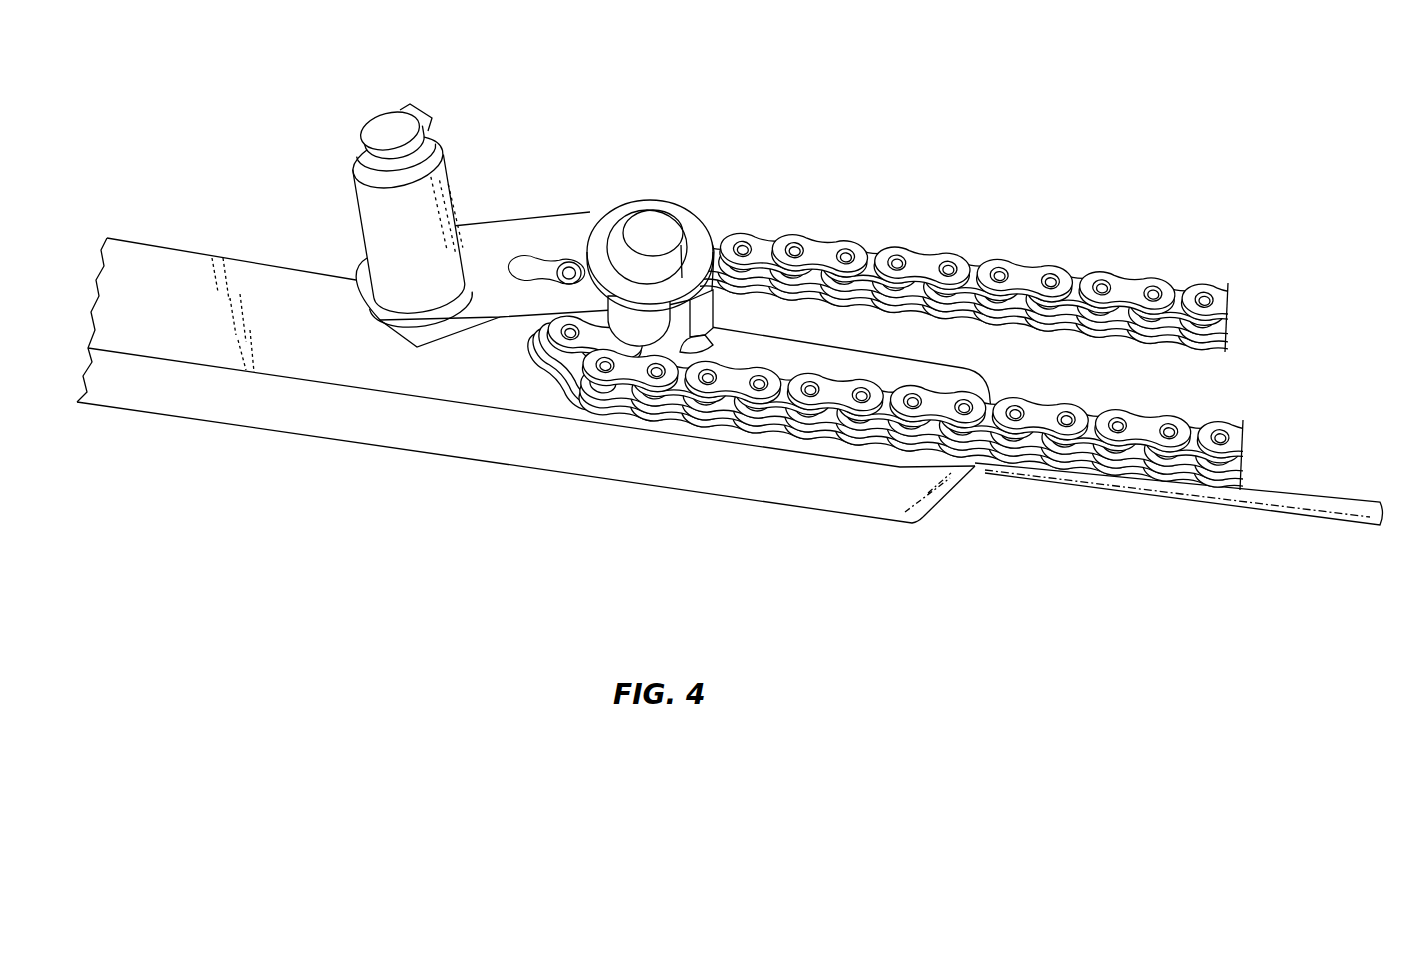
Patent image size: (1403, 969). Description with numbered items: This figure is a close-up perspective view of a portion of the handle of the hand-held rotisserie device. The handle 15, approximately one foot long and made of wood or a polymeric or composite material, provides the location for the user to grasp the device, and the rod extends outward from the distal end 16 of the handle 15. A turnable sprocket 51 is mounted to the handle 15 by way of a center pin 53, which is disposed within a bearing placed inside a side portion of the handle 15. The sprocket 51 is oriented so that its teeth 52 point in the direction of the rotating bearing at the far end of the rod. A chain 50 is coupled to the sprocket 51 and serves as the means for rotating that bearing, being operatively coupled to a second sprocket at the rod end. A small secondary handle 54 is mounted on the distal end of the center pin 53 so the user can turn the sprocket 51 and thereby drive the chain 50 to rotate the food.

The handle 15 is at (200, 397).
The distal end of the handle 16 is at (955, 483).
The chain 50 is at (1027, 272).
The turnable sprocket 51 is at (705, 285).
The teeth of the sprocket 52 is at (708, 262).
The center pin 53 is at (652, 223).
The secondary handle 54 is at (362, 197).